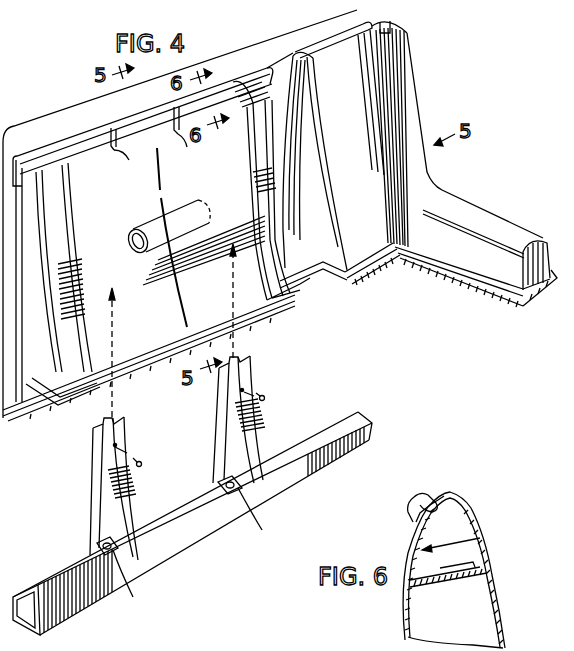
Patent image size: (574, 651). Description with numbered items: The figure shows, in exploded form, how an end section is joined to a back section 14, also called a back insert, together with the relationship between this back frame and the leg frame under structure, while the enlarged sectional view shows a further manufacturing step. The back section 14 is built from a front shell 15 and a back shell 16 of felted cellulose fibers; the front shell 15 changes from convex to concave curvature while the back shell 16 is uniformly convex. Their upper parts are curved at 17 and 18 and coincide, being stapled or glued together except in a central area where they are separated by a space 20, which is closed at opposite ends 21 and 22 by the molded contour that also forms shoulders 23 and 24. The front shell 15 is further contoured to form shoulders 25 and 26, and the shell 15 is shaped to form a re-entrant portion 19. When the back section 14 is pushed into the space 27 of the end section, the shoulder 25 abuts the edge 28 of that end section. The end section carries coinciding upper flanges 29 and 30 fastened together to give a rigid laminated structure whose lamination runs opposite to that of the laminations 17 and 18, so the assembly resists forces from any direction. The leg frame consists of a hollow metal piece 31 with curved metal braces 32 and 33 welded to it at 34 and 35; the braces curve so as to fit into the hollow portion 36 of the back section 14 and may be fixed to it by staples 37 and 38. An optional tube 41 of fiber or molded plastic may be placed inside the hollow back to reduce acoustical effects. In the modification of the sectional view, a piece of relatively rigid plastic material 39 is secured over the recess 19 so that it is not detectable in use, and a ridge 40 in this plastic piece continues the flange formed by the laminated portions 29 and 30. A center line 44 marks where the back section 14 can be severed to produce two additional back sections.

In FIG. 4, the back section 14 is at (208, 169).
In FIG. 4, the space 20 is at (146, 114).
In FIG. 4, the end of space 21 is at (112, 149).
In FIG. 4, the end of space 22 is at (176, 120).
In FIG. 4, the shoulder 23 is at (128, 161).
In FIG. 4, the shoulder 24 is at (184, 144).
In FIG. 4, the shoulder 25 is at (250, 172).
In FIG. 4, the shoulder 26 is at (76, 246).
In FIG. 4, the space 27 is at (313, 185).
In FIG. 4, the edge 28 is at (323, 141).
In FIG. 4, the upper flange 29 is at (290, 56).
In FIG. 4, the upper flange 30 is at (300, 52).
In FIG. 4, the hollow metal piece 31 is at (340, 457).
In FIG. 4, the metal brace 32 is at (137, 491).
In FIG. 4, the metal brace 33 is at (257, 429).
In FIG. 4, the fastening point 34 is at (121, 579).
In FIG. 4, the fastening point 35 is at (245, 515).
In FIG. 4, the staple 37 is at (147, 450).
In FIG. 4, the staple 38 is at (266, 395).
In FIG. 4, the tube 41 is at (203, 214).
In FIG. 4, the center line 44 is at (162, 195).
In FIG. 6, the front shell 15 is at (498, 592).
In FIG. 6, the back shell 16 is at (403, 618).
In FIG. 6, the curved upper portion 17 is at (450, 492).
In FIG. 6, the curved upper portion 18 is at (433, 494).
In FIG. 6, the re-entrant portion 19 is at (481, 538).
In FIG. 6, the hollow portion 36 is at (458, 621).
In FIG. 6, the rigid plastic material 39 is at (469, 500).
In FIG. 6, the ridge 40 is at (415, 495).